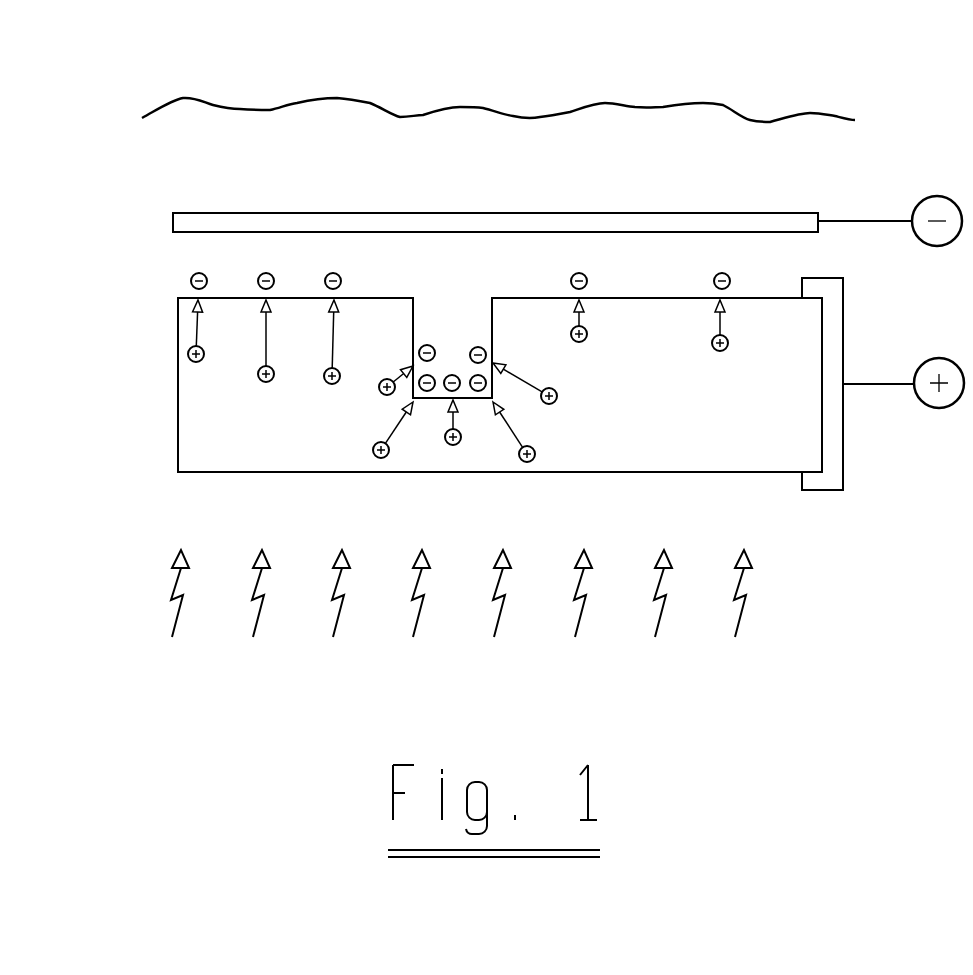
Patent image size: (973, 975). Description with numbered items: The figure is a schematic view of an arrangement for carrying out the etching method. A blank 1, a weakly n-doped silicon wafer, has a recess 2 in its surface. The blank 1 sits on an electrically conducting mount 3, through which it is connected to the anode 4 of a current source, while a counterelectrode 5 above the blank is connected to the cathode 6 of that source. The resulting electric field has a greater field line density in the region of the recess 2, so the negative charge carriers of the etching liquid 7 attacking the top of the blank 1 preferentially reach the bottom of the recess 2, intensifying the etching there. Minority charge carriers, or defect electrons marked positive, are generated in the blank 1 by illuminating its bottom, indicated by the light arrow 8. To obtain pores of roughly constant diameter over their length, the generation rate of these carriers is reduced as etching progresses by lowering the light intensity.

The blank 1 is at (225, 420).
The recess 2 is at (462, 327).
The electrically conducting mount 3 is at (823, 482).
The anode 4 is at (939, 410).
The counterelectrode 5 is at (648, 220).
The cathode 6 is at (935, 212).
The etching liquid 7 is at (320, 172).
The light arrow 8 is at (337, 633).